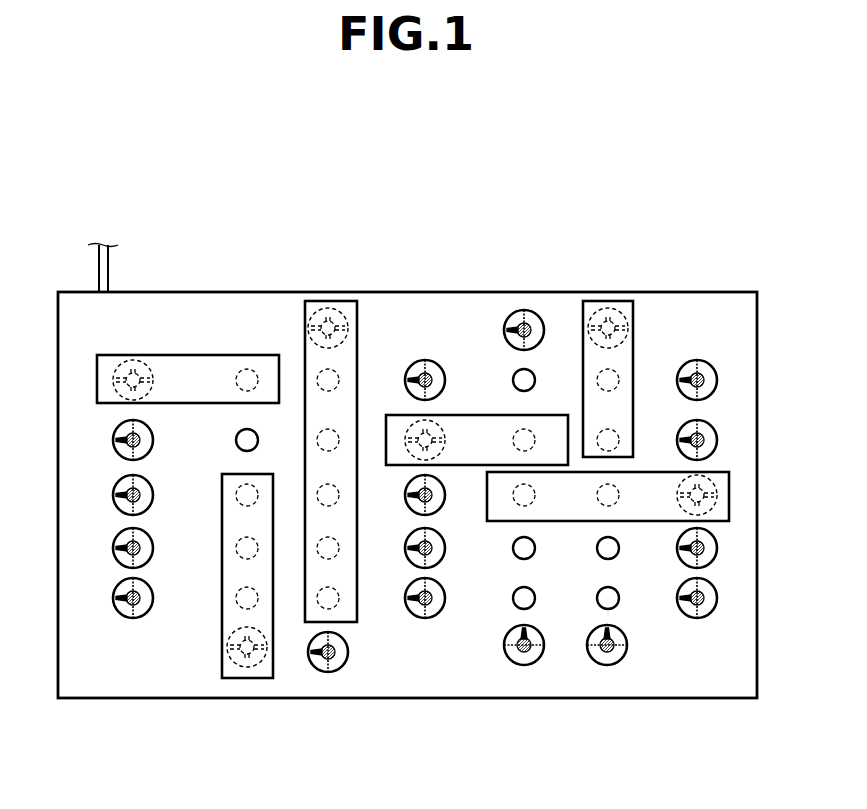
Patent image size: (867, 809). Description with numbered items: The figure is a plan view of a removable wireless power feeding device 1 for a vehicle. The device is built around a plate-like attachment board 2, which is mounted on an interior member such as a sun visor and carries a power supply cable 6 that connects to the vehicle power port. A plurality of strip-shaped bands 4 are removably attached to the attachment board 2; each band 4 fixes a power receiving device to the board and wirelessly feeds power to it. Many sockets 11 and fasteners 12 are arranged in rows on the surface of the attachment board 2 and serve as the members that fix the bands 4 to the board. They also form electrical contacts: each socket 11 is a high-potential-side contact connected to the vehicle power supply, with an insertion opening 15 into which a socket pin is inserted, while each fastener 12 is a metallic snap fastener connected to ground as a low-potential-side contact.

The removable wireless power feeding device 1 is at (384, 176).
The attachment board 2 is at (416, 291).
The band 4 is at (97, 375).
The power supply cable 6 is at (108, 268).
The socket 11 is at (518, 666).
The fastener 12 is at (513, 603).
The insertion opening 15 is at (532, 650).